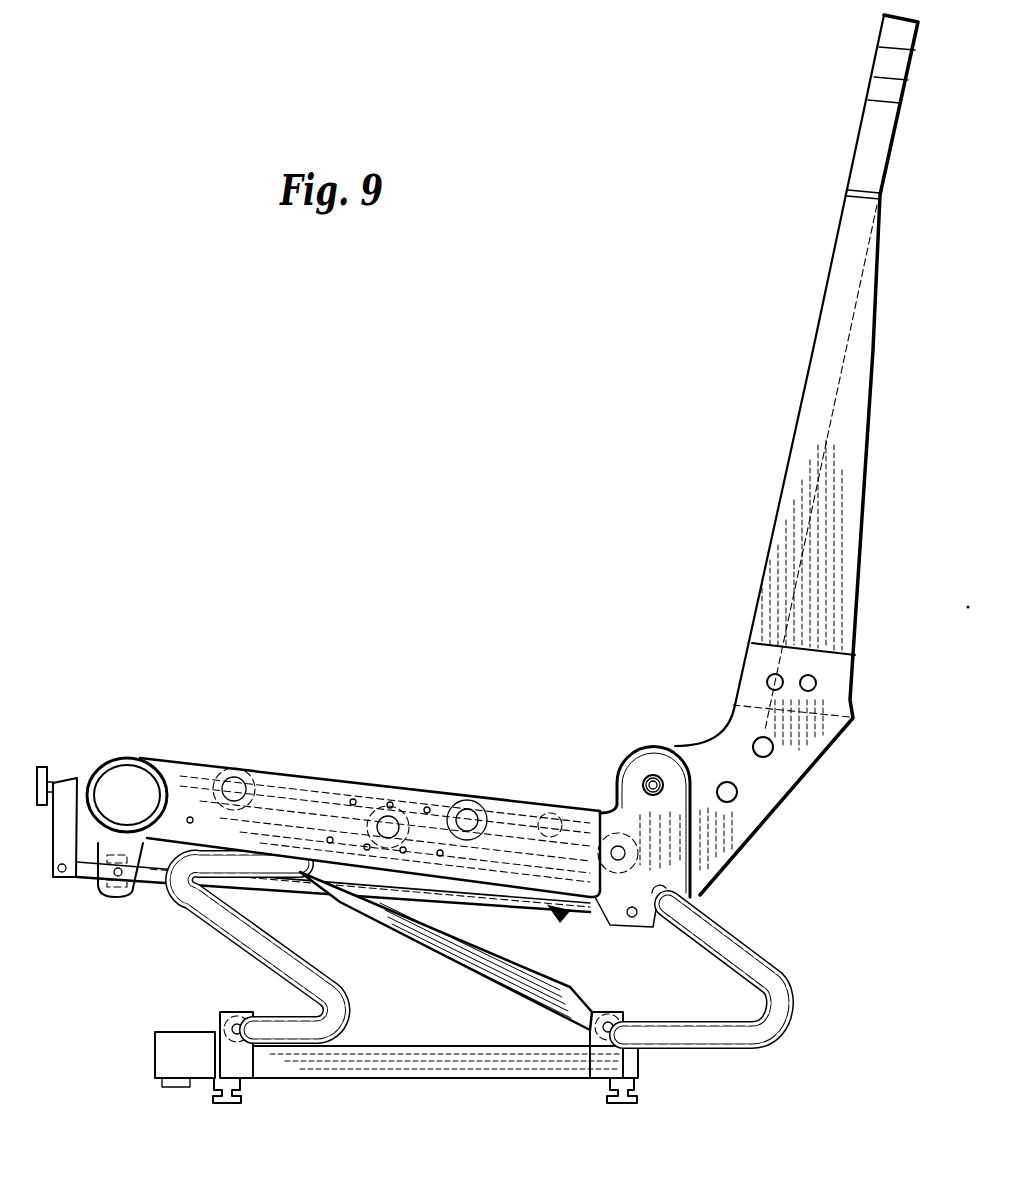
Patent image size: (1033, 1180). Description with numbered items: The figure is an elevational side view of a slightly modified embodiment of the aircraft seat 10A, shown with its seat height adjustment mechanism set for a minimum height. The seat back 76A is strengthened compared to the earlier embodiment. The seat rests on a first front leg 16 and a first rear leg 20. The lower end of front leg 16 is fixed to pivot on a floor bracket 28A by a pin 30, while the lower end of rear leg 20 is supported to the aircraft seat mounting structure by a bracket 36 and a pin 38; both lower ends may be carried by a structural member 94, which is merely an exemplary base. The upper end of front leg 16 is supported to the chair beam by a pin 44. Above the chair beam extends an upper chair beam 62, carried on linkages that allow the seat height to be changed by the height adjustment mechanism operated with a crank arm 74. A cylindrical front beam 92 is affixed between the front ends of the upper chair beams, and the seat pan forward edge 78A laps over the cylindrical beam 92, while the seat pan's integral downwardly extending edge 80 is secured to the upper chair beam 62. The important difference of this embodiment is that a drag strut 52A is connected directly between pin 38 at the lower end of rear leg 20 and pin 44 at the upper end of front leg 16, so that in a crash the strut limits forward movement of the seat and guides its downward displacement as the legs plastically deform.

The seat adjuster assembly 10A is at (427, 525).
The seat back 76A is at (768, 452).
The seat pan forward edge 78A is at (112, 758).
The crank arm 74 is at (73, 787).
The cylindrical front beam 92 is at (140, 757).
The pin 44 is at (285, 792).
The downwardly extending edge 80 is at (442, 800).
The upper chair beam 62 is at (665, 867).
The first rear leg 20 is at (762, 968).
The first front leg 16 is at (275, 947).
The pin 30 is at (228, 1032).
The drag strut 52A is at (505, 980).
The pin 38 is at (608, 1027).
The front foot 28A is at (238, 1066).
The structural member 94 is at (447, 1062).
The bracket 36 is at (600, 1065).